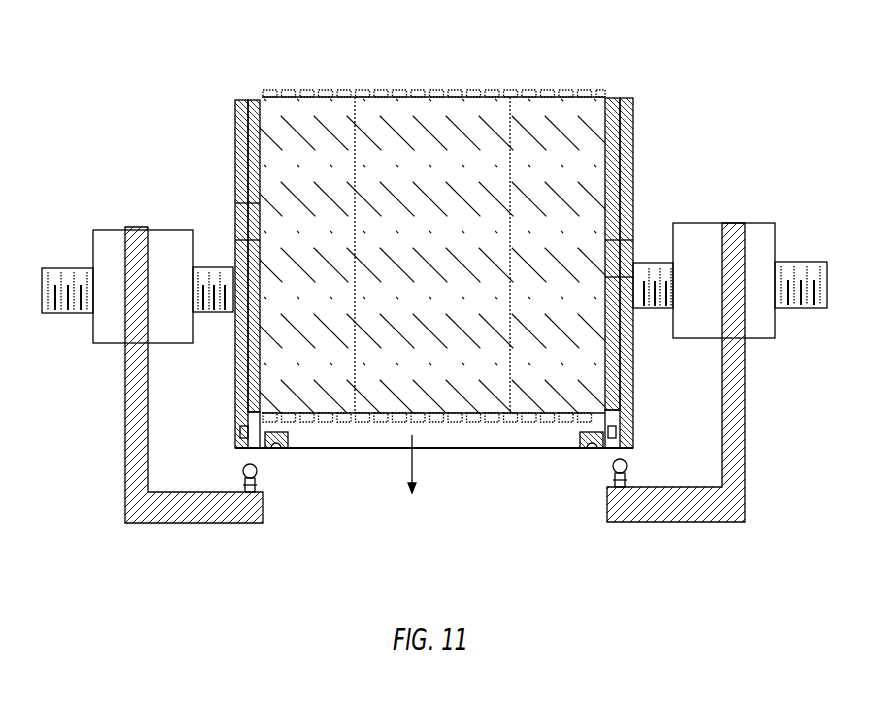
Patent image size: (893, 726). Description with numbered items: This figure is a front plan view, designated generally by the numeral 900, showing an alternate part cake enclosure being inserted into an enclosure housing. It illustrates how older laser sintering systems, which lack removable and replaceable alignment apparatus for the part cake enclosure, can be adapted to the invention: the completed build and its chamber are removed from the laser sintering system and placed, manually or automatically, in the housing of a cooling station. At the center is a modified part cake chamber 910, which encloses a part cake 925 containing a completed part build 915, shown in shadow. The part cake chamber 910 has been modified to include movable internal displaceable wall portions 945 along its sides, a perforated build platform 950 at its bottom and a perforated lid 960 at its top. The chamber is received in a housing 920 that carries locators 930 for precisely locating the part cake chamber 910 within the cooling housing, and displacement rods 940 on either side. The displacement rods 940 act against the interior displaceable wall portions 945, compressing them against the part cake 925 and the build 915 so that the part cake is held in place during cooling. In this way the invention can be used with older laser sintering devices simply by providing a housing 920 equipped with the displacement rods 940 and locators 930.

The alternate part cake enclosure insertion arrangement 900 is at (133, 66).
The part cake chamber 910 is at (633, 135).
The part build 915 is at (345, 158).
The housing 920 is at (125, 420).
The part cake 925 is at (570, 170).
The locators 930 is at (258, 474).
The displacement rods 940 is at (70, 268).
The displaceable wall portions 945 is at (240, 205).
The perforated build platform 950 is at (495, 423).
The perforated lid 960 is at (515, 90).